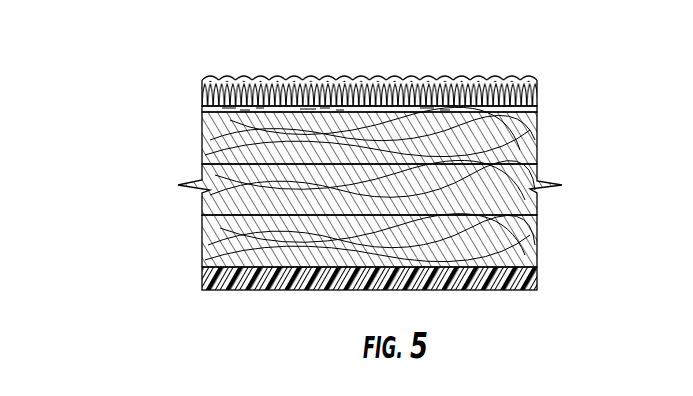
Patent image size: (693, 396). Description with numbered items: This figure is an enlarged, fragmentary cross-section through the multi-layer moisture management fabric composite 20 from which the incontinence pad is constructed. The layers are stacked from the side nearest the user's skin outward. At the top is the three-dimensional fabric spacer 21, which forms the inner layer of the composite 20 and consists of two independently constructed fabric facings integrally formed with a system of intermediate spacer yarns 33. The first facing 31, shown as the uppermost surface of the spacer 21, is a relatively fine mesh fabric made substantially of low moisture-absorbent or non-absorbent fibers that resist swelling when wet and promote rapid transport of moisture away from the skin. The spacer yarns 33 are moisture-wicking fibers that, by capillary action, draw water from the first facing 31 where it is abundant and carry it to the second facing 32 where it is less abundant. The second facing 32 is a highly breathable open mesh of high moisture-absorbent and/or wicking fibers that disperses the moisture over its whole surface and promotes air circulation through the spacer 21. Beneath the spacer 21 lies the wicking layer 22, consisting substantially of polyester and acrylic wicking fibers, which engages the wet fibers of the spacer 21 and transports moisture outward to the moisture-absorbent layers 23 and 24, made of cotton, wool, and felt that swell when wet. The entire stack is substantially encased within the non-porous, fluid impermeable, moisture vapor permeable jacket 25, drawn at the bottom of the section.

The multi-layer moisture management fabric composite 20 is at (595, 227).
The three-dimensional fabric spacer 21 is at (202, 95).
The wicking layer 22 is at (202, 136).
The moisture-absorbent layer 23 is at (202, 207).
The moisture-absorbent layer 24 is at (202, 237).
The jacket 25 is at (202, 280).
The first facing 31 is at (538, 78).
The second facing 32 is at (538, 108).
The spacer yarns 33 is at (538, 101).